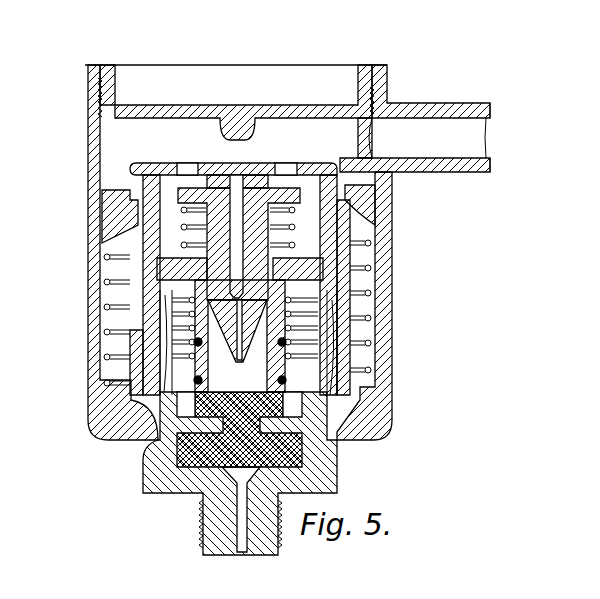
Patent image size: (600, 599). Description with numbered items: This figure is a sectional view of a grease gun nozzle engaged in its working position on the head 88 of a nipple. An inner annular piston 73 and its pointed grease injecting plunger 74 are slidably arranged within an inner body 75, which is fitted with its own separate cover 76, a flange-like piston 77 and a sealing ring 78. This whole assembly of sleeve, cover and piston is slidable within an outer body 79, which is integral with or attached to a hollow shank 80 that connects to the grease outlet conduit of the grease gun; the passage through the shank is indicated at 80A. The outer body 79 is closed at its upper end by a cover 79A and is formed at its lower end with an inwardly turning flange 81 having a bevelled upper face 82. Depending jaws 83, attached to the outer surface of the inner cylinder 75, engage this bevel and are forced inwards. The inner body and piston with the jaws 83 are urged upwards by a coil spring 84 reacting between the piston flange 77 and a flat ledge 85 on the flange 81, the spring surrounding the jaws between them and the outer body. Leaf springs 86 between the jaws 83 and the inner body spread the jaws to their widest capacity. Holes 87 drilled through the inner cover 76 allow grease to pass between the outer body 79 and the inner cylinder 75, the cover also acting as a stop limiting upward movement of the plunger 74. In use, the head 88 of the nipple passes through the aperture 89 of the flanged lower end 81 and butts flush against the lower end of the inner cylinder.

The inner annular piston 73 is at (335, 280).
The grease injecting plunger 74 is at (256, 172).
The inner body 75 is at (325, 318).
The cover 76 is at (152, 170).
The flange-like piston 77 is at (350, 224).
The sealing ring 78 is at (98, 208).
The outer body 79 is at (325, 343).
The cover 79A is at (187, 113).
The hollow shank 80 is at (438, 112).
The outlet passage 80A is at (465, 142).
The inwardly turning flange 81 is at (98, 418).
The bevelled upper face 82 is at (350, 417).
The depending jaws 83 is at (103, 323).
The coil spring 84 is at (105, 283).
The flat ledge 85 is at (105, 382).
The leaf springs 86 is at (335, 368).
The holes 87 is at (187, 170).
The head 88 is at (327, 410).
The aperture 89 is at (123, 438).